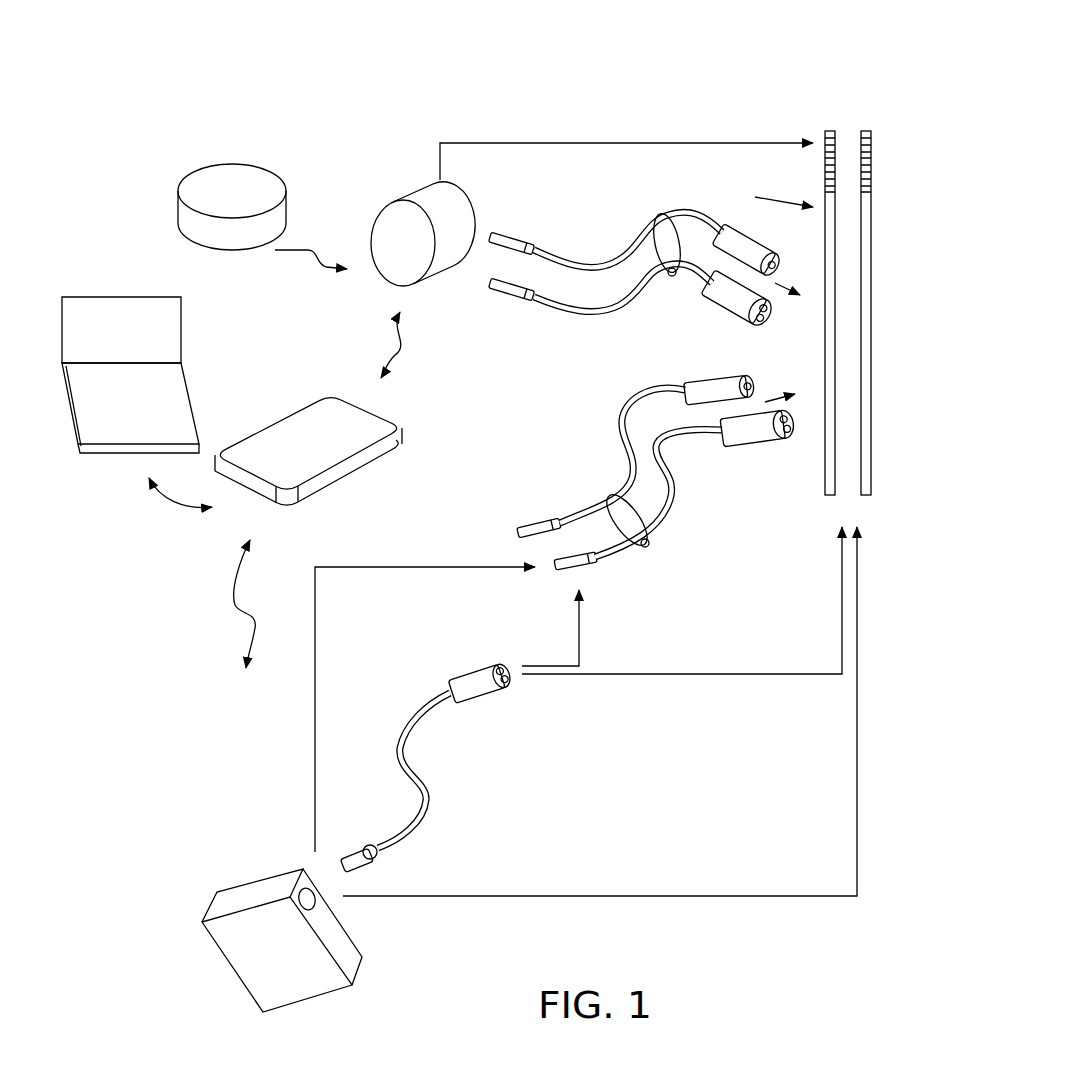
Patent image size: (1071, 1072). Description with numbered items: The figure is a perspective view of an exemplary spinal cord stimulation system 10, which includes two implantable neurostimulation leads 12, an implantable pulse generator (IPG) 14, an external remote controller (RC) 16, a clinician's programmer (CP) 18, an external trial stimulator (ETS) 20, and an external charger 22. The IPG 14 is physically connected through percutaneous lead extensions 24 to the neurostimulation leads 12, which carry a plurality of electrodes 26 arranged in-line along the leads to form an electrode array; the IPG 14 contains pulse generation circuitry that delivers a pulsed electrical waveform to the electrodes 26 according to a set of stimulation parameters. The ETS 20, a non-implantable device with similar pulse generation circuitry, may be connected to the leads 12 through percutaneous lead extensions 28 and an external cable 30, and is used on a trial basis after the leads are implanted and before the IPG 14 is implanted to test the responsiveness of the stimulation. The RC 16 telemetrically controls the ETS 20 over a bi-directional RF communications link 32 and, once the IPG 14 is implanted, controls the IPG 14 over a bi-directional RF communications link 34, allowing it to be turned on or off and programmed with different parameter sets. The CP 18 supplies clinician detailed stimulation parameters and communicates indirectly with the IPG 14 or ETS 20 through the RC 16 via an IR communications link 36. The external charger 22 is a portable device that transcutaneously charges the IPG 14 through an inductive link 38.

The SCS system 10 is at (609, 92).
The implantable neurostimulation leads 12 is at (801, 287).
The implantable pulse generator (IPG) 14 is at (400, 198).
The external remote controller (RC) 16 is at (321, 412).
The clinician's programmer (CP) 18 is at (105, 312).
The external trial stimulator (ETS) 20 is at (252, 893).
The external charger 22 is at (232, 176).
The percutaneous lead extensions 24 is at (658, 212).
The electrodes 26 is at (836, 160).
The percutaneous lead extensions 28 is at (605, 497).
The external cable 30 is at (421, 710).
The bi-directional RF communications link 32 is at (250, 645).
The bi-directional RF communications link 34 is at (398, 356).
The IR communications link 36 is at (172, 500).
The inductive link 38 is at (292, 252).